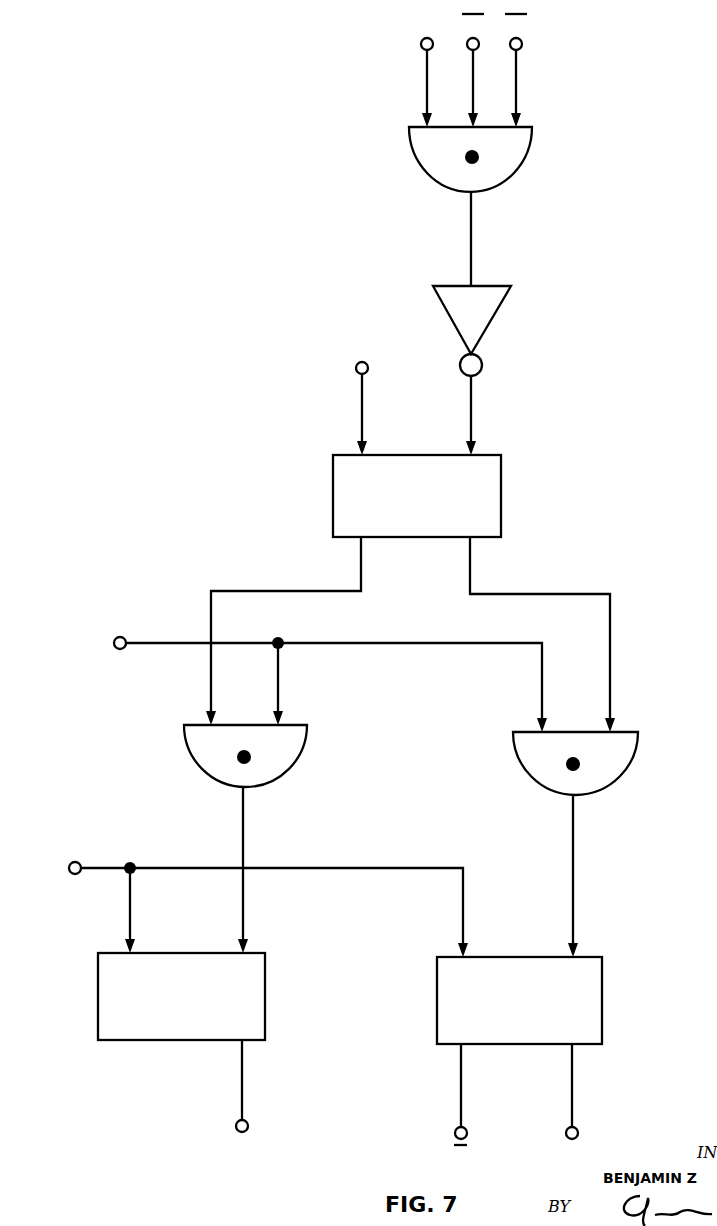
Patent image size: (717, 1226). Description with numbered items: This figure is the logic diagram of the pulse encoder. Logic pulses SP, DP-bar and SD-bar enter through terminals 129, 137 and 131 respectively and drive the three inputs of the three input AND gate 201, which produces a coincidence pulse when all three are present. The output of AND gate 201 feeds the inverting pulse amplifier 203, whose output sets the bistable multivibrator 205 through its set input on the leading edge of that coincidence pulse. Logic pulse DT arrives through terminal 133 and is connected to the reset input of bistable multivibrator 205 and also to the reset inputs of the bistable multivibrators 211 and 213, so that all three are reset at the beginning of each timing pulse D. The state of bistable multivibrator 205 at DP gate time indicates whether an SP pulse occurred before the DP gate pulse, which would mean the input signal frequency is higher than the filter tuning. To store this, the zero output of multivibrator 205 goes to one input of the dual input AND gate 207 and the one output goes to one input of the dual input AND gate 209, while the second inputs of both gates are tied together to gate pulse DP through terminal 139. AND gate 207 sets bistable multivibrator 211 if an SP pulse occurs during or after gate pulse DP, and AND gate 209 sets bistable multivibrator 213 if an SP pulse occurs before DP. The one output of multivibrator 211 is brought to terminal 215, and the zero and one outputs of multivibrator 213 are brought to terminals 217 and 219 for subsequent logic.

The terminal 129 is at (421, 44).
The terminal 131 is at (522, 44).
The terminal 137 is at (472, 51).
The terminal 133 is at (356, 369).
The terminal 139 is at (115, 650).
The three input AND gate 201 is at (500, 163).
The inverting pulse amplifier 203 is at (487, 304).
The bistable multivibrator 205 is at (480, 491).
The dual input AND gate 207 is at (218, 765).
The dual input AND gate 209 is at (603, 765).
The bistable multivibrator 211 is at (110, 1016).
The bistable multivibrator 213 is at (585, 1002).
The terminal 215 is at (235, 1126).
The terminal 217 is at (454, 1135).
The terminal 219 is at (578, 1137).